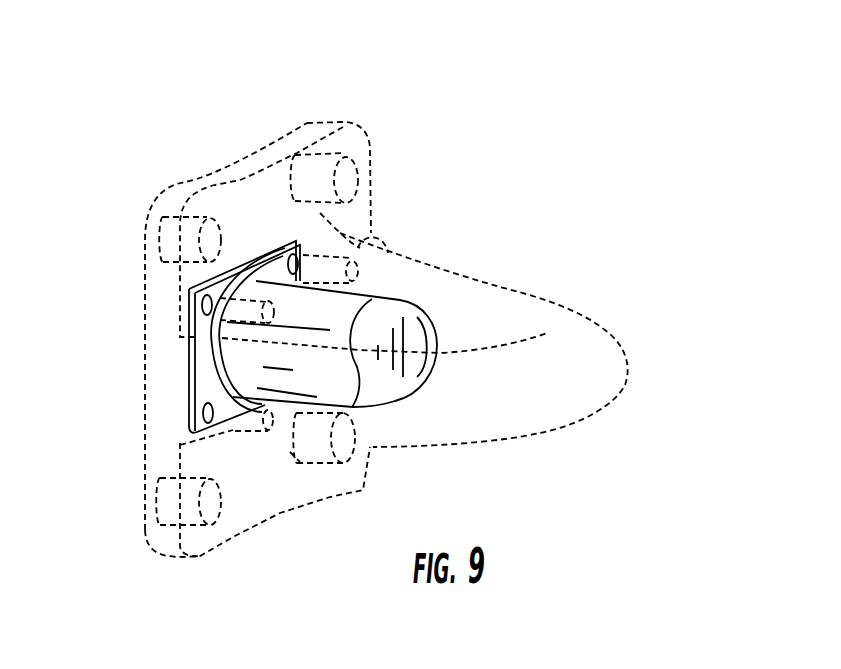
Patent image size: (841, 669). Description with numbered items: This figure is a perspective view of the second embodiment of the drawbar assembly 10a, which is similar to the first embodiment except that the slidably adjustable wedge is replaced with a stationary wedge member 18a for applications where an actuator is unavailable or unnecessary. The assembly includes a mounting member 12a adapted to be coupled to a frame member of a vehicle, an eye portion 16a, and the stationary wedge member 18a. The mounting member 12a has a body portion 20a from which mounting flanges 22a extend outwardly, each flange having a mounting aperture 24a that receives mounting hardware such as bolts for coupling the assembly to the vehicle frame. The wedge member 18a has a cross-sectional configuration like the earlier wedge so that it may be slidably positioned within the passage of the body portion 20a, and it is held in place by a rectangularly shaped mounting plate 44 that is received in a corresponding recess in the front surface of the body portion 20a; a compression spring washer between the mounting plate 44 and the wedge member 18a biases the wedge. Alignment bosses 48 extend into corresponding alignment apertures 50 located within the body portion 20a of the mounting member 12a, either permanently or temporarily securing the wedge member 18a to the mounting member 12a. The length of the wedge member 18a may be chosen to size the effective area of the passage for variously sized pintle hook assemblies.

The drawbar assembly 10a is at (446, 188).
The mounting member 12a is at (145, 337).
The eye portion 16a is at (597, 393).
The stationary wedge member 18a is at (380, 296).
The body portion 20a is at (160, 408).
The mounting flange 22a is at (357, 168).
The mounting aperture 24a is at (351, 140).
The mounting plate 44 is at (207, 293).
The alignment boss 48 is at (247, 435).
The alignment aperture 50 is at (235, 430).